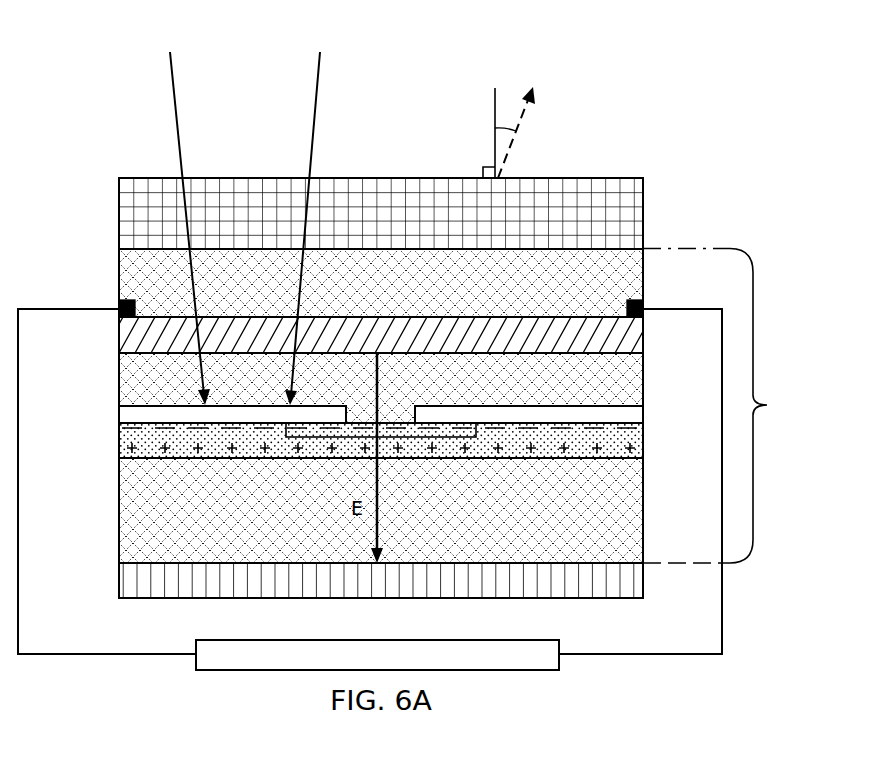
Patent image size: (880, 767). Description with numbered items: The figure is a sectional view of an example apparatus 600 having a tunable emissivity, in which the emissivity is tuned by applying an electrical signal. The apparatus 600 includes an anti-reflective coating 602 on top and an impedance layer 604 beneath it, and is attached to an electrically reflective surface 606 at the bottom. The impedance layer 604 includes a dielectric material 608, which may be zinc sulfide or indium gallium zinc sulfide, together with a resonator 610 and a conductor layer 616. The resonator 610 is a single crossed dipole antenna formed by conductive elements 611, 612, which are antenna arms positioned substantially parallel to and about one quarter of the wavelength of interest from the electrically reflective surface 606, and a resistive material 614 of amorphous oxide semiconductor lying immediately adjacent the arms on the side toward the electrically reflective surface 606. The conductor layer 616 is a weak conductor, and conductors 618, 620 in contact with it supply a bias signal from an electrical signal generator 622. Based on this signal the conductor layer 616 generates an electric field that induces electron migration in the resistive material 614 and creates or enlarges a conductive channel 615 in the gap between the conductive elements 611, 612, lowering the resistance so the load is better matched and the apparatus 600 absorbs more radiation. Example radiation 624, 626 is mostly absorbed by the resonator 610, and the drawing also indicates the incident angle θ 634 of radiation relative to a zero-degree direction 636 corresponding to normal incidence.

The apparatus 600 is at (104, 156).
The anti-reflective coating 602 is at (119, 207).
The impedance layer 604 is at (771, 413).
The electrically reflective surface 606 is at (119, 570).
The dielectric material 608 is at (630, 275).
The resonator 610 is at (139, 390).
The conductive element 611 is at (119, 411).
The conductive element 612 is at (645, 412).
The resistive material 614 is at (119, 440).
The conductive channel 615 is at (316, 437).
The conductor layer 616 is at (119, 337).
The conductor 618 is at (119, 304).
The conductor 620 is at (645, 306).
The electrical signal generator 622 is at (196, 641).
The radiation 624 is at (172, 85).
The radiation 626 is at (318, 82).
The incident angle θ 634 is at (518, 92).
The zero degrees 636 is at (495, 140).